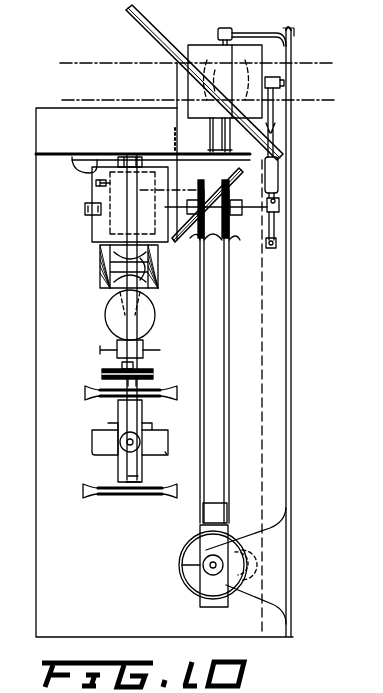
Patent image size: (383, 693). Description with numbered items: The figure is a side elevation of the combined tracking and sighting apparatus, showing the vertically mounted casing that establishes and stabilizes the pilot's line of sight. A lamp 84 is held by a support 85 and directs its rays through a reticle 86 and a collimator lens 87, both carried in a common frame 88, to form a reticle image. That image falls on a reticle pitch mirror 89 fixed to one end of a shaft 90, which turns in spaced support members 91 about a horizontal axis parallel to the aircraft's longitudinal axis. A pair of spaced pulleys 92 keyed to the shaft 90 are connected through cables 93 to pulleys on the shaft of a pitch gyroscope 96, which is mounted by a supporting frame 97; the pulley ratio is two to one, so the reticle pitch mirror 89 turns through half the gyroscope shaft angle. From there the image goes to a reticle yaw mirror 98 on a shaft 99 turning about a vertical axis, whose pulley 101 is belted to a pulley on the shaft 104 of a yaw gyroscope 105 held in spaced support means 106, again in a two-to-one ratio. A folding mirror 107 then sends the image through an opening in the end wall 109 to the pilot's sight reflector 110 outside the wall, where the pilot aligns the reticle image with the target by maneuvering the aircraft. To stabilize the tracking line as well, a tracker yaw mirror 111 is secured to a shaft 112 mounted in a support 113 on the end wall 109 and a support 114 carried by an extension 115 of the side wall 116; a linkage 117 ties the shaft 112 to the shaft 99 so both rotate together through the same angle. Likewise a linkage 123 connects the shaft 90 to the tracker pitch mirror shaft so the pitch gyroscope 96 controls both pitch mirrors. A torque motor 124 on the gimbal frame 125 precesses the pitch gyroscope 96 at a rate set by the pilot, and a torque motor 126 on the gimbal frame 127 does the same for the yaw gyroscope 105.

The lamp 84 is at (106, 316).
The support 85 is at (175, 350).
The reticle 86 is at (150, 272).
The collimator lens 87 is at (158, 262).
The common frame 88 is at (100, 271).
The reticle pitch mirror 89 is at (93, 236).
The shaft 90 is at (265, 212).
The support members 91 is at (280, 207).
The pulleys 92 is at (215, 215).
The cables 93 is at (227, 302).
The pitch gyroscope 96 is at (180, 554).
The supporting frame 97 is at (280, 562).
The reticle yaw mirror 98 is at (95, 183).
The shaft 99 is at (143, 347).
The pulley 101 is at (106, 371).
The shaft 104 is at (135, 386).
The yaw gyroscope 105 is at (108, 440).
The support means 106 is at (172, 400).
The folding mirror 107 is at (241, 189).
The end wall 109 is at (48, 154).
The pilot's sight reflector 110 is at (163, 3).
The tracker yaw mirror 111 is at (200, 50).
The shaft 112 is at (226, 142).
The support 113 is at (215, 142).
The support 114 is at (252, 34).
The extension 115 is at (292, 52).
The side wall 116 is at (287, 306).
The linkage 117 is at (122, 156).
The linkage 123 is at (283, 175).
The torque motor 124 is at (216, 515).
The gimbal frame 125 is at (206, 535).
The torque motor 126 is at (134, 444).
The gimbal frame 127 is at (134, 480).